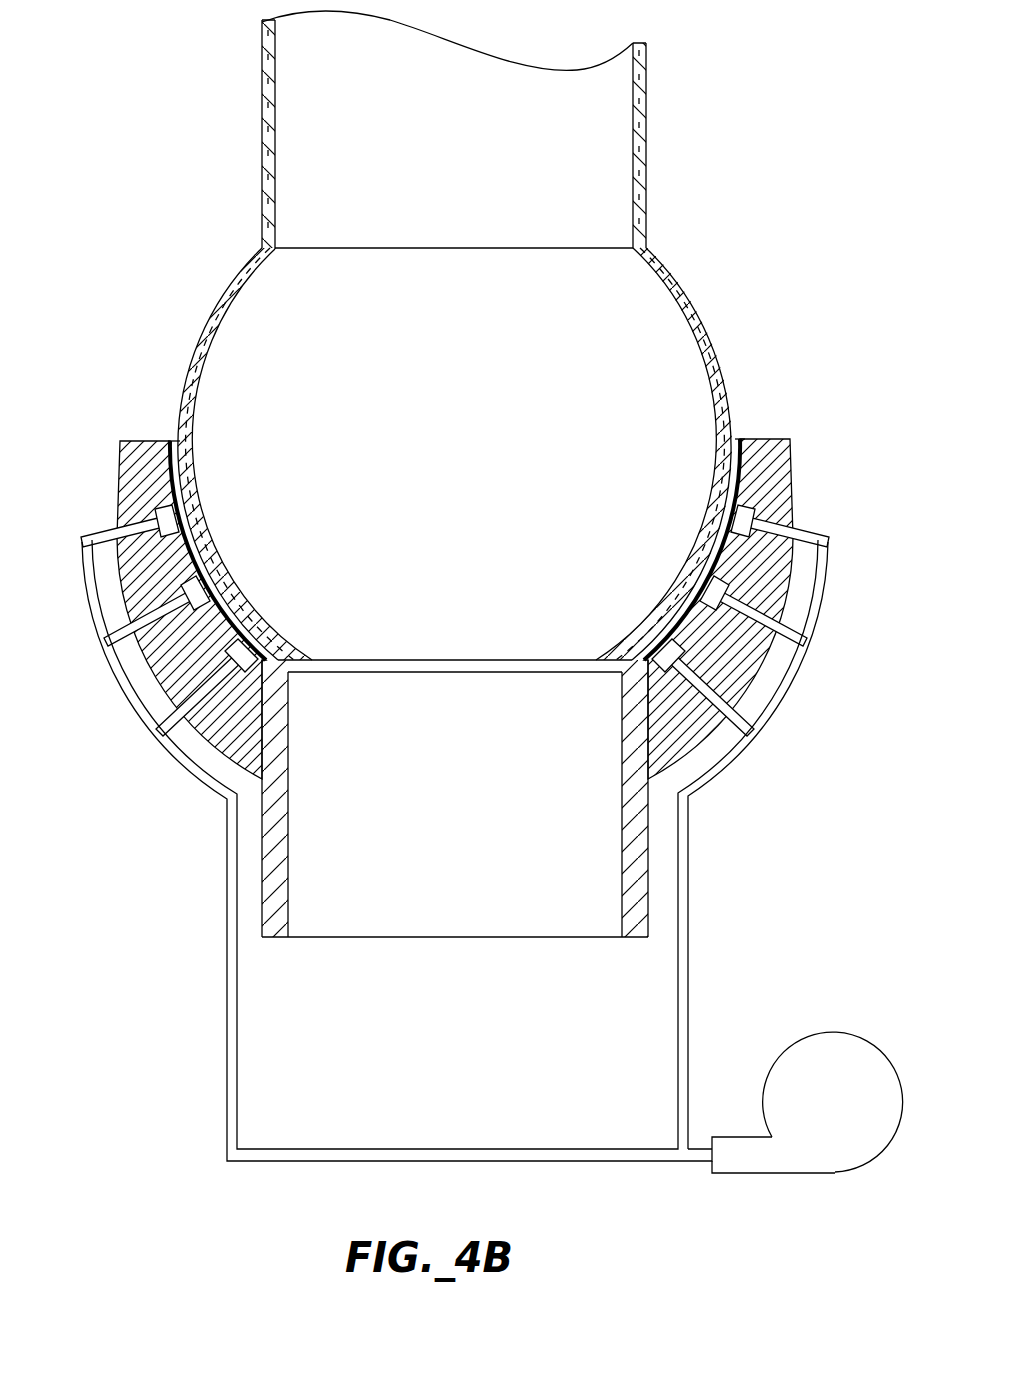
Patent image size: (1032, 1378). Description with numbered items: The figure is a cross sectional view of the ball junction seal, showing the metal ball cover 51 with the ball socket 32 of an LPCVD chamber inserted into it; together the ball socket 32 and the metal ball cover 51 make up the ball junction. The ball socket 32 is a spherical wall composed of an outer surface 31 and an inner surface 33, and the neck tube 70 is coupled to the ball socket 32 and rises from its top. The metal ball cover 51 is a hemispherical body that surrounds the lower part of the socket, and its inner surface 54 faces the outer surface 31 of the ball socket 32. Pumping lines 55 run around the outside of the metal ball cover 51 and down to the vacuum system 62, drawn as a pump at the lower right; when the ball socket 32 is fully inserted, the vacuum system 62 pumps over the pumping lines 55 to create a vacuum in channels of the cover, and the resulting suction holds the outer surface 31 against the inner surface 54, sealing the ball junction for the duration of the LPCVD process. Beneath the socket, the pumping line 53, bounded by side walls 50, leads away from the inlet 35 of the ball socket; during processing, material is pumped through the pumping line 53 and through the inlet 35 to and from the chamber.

The neck tube 70 is at (652, 130).
The inner surface of ball socket 33 is at (677, 285).
The outer surface of ball socket 31 is at (645, 410).
The ball socket 32 is at (733, 339).
The inner surface of metal ball cover 54 is at (172, 435).
The metal ball cover 51 is at (118, 490).
The pumping lines 55 is at (145, 707).
The inlet of ball socket 35 is at (455, 667).
The side walls of pumping line 50 is at (275, 935).
The pumping line 53 is at (437, 897).
The vacuum system 62 is at (823, 1038).